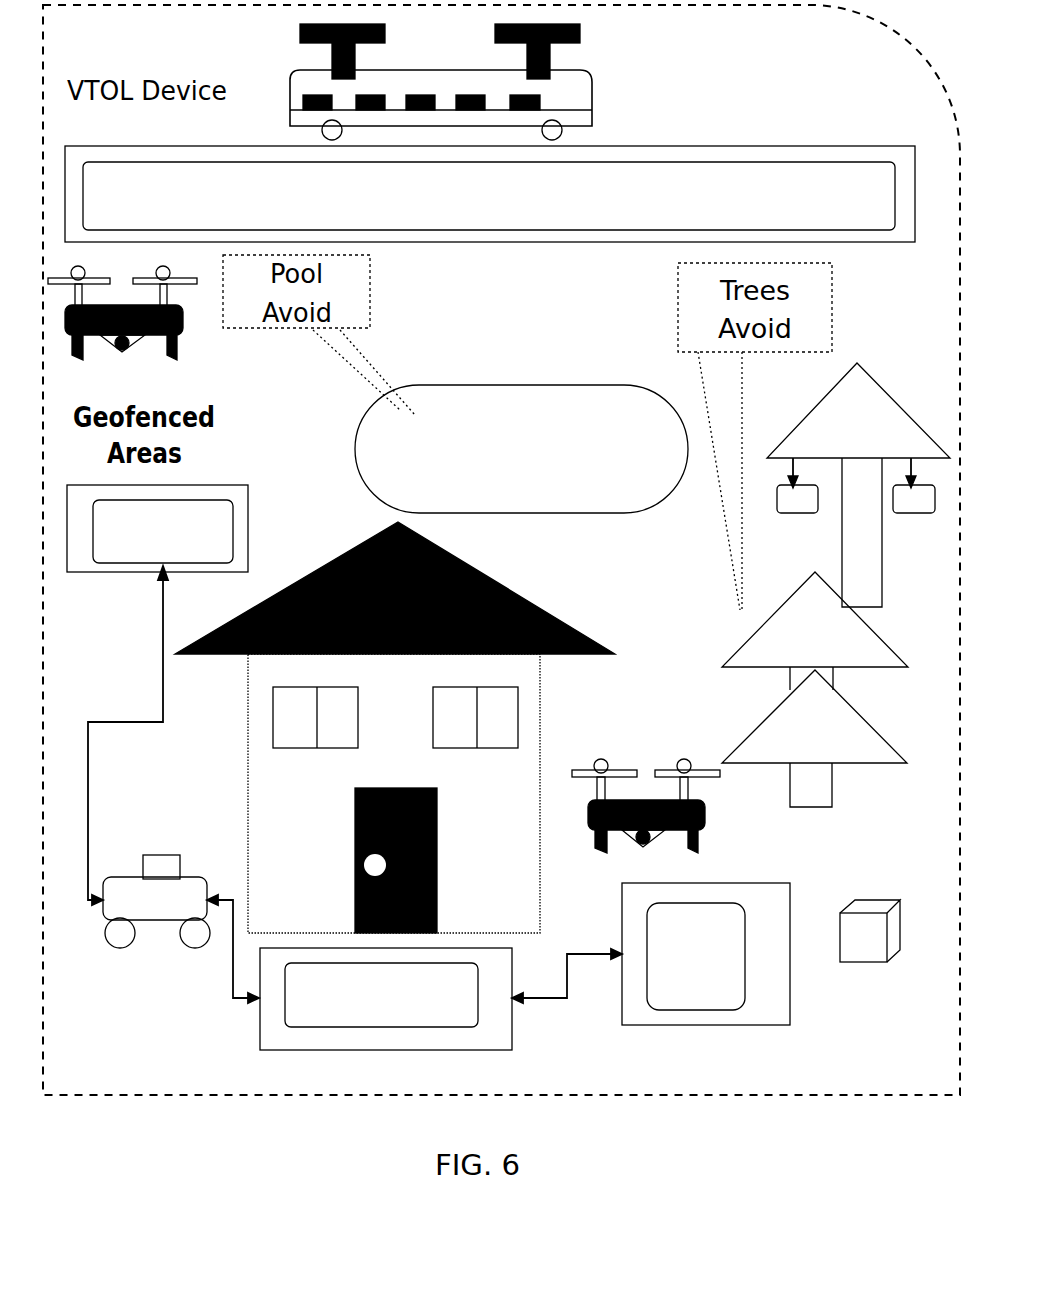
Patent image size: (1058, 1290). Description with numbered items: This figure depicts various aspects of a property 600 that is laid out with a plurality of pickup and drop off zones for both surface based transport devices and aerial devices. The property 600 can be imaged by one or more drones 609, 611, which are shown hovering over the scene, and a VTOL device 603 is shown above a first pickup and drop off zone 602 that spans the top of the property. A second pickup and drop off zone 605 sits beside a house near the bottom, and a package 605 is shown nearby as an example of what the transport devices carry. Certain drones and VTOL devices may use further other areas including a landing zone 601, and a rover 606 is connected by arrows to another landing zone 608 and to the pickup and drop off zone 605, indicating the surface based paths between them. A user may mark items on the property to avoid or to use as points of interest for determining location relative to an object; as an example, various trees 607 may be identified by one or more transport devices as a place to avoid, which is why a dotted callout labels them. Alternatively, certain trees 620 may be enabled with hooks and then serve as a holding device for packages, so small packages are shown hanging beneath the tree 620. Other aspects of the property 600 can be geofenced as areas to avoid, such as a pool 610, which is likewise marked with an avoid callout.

The property 600 is at (660, 1090).
The further area 601 is at (762, 1015).
The pickup and drop off zone 602 is at (793, 180).
The VTOL device 603 is at (594, 105).
The pickup and drop off zone 605 is at (498, 1040).
The rover 606 is at (118, 938).
The trees 607 is at (878, 762).
The landing zone LZ-2 608 is at (243, 530).
The drone 609 is at (183, 345).
The pool 610 is at (633, 497).
The drone 611 is at (705, 822).
The trees 620 is at (877, 540).